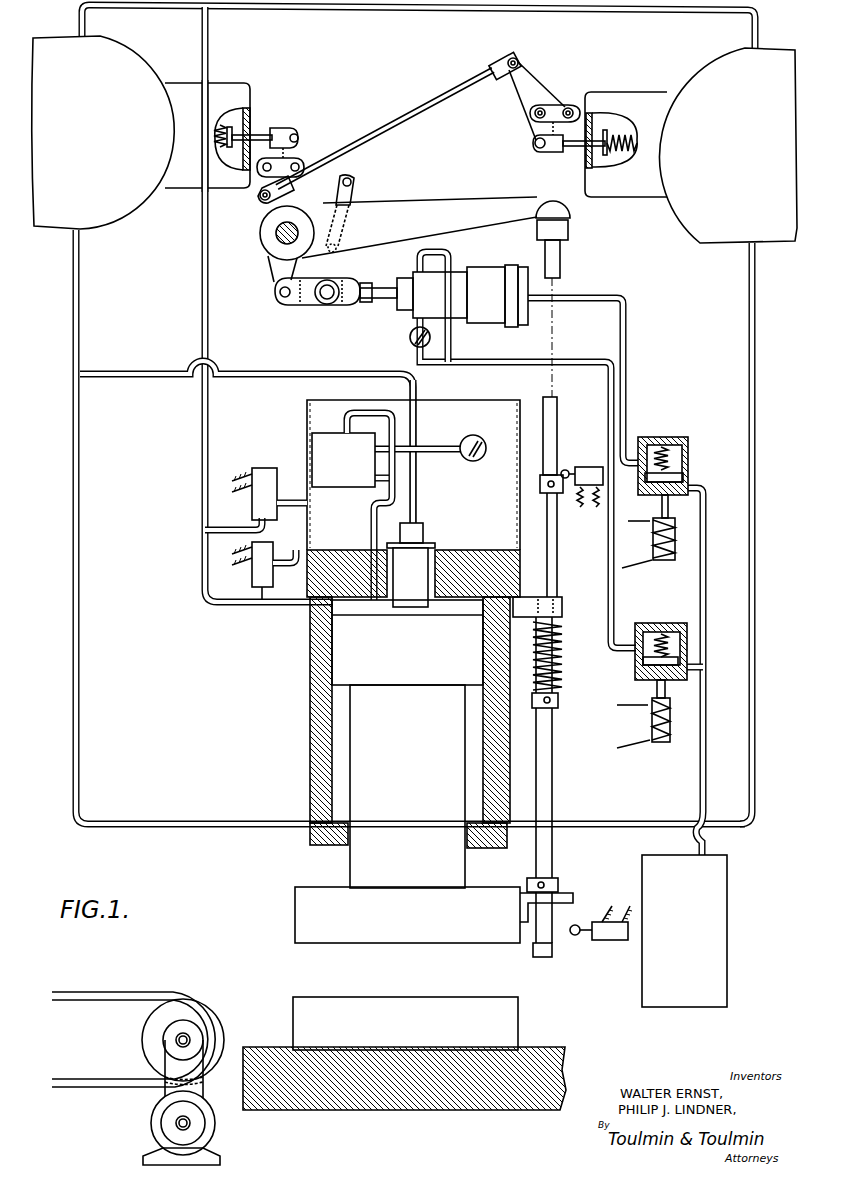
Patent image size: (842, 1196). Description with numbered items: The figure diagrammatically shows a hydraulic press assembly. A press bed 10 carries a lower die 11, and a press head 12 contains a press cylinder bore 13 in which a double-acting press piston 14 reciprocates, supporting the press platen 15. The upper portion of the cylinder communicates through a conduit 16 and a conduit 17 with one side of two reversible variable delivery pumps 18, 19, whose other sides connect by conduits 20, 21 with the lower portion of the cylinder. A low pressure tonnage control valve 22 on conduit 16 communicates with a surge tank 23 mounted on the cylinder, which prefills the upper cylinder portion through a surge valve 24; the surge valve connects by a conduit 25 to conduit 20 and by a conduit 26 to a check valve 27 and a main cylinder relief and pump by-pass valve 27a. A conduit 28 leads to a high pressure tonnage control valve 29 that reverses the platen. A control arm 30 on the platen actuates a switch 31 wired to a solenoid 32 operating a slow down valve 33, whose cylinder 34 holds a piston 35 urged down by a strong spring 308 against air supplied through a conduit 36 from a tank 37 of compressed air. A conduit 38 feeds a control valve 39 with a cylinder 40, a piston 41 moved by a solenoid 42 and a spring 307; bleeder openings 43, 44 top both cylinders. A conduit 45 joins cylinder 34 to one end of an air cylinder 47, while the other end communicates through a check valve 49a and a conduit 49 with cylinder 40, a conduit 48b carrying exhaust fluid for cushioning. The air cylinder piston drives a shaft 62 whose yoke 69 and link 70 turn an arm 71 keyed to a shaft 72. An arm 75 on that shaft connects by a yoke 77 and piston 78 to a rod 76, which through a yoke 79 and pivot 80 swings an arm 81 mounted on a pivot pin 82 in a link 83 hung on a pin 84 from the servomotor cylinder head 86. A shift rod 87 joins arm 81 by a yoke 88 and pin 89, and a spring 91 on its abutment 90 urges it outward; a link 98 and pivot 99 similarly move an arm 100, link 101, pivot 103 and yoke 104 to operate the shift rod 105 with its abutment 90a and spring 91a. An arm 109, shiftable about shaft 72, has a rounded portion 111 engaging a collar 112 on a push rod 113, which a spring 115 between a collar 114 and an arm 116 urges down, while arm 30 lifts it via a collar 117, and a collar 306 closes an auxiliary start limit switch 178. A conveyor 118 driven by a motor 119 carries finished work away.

The press bed 10 is at (531, 1050).
The lower die 11 is at (405, 1023).
The press head 12 is at (309, 692).
The press cylinder bore 13 is at (333, 716).
The press piston 14 is at (407, 642).
The press platen 15 is at (407, 915).
The conduit 16 is at (205, 433).
The conduit 17 is at (182, 8).
The reversible variable delivery pump 18 is at (53, 48).
The reversible variable delivery pump 19 is at (777, 62).
The conduit 20 is at (80, 306).
The conduit 21 is at (750, 348).
The low pressure tonnage control valve 22 is at (253, 570).
The surge tank 23 is at (497, 400).
The surge valve 24 is at (411, 565).
The conduit 25 is at (418, 486).
The conduit 26 is at (431, 446).
The check valve 27 is at (481, 442).
The main cylinder relief and pump by-pass valve 27a is at (352, 506).
The conduit 28 is at (240, 522).
The high pressure tonnage control valve 29 is at (268, 470).
The control arm 30 is at (573, 896).
The switch 31 is at (604, 941).
The solenoid 32 is at (653, 546).
The slow down valve 33 is at (690, 454).
The cylinder 34 is at (688, 440).
The piston 35 is at (690, 480).
The conduit 36 is at (707, 532).
The tank 37 is at (684, 931).
The conduit 38 is at (700, 680).
The control valve 39 is at (643, 623).
The cylinder 40 is at (684, 623).
The piston 41 is at (649, 677).
The solenoid 42 is at (652, 727).
The bleeder opening 43 is at (663, 443).
The bleeder opening 44 is at (660, 632).
The conduit 45 is at (627, 370).
The air cylinder 47 is at (494, 268).
The conduit 48b is at (445, 258).
The conduit 49 is at (476, 358).
The check valve 49a is at (410, 340).
The shaft 62 is at (386, 299).
The yoke 69 is at (345, 300).
The link 70 is at (305, 299).
The arm 71 is at (268, 266).
The shaft 72 is at (262, 236).
The arm 75 is at (263, 204).
The rod 76 is at (398, 124).
The yoke 77 is at (288, 188).
The piston 78 is at (259, 195).
The yoke 79 is at (488, 70).
The pivot 80 is at (510, 58).
The arm 81 is at (530, 96).
The pivot pin 82 is at (534, 113).
The link 83 is at (554, 104).
The pin 84 is at (569, 107).
The servomotor cylinder head 86 is at (620, 100).
The shift rod 87 is at (572, 147).
The yoke 88 is at (548, 151).
The pin 89 is at (534, 143).
The abutment 90 is at (600, 117).
The abutment 90a is at (246, 110).
The spring 91 is at (626, 124).
The spring 91a is at (229, 124).
The link 98 is at (352, 186).
The pivot 99 is at (350, 178).
The arm 100 is at (300, 160).
The link 101 is at (302, 170).
The pivot 103 is at (296, 133).
The yoke 104 is at (276, 130).
The shift rod 105 is at (250, 122).
The arm 109 is at (409, 204).
The rounded portion 111 is at (574, 207).
The collar 112 is at (568, 231).
The push rod 113 is at (560, 259).
The collar 114 is at (559, 702).
The spring 115 is at (562, 656).
The arm 116 is at (559, 610).
The collar 117 is at (553, 878).
The conveyor 118 is at (93, 1002).
The motor 119 is at (160, 1122).
The auxiliary start limit switch 178 is at (588, 466).
The collar 306 is at (553, 514).
The spring 307 is at (645, 666).
The spring 308 is at (655, 440).